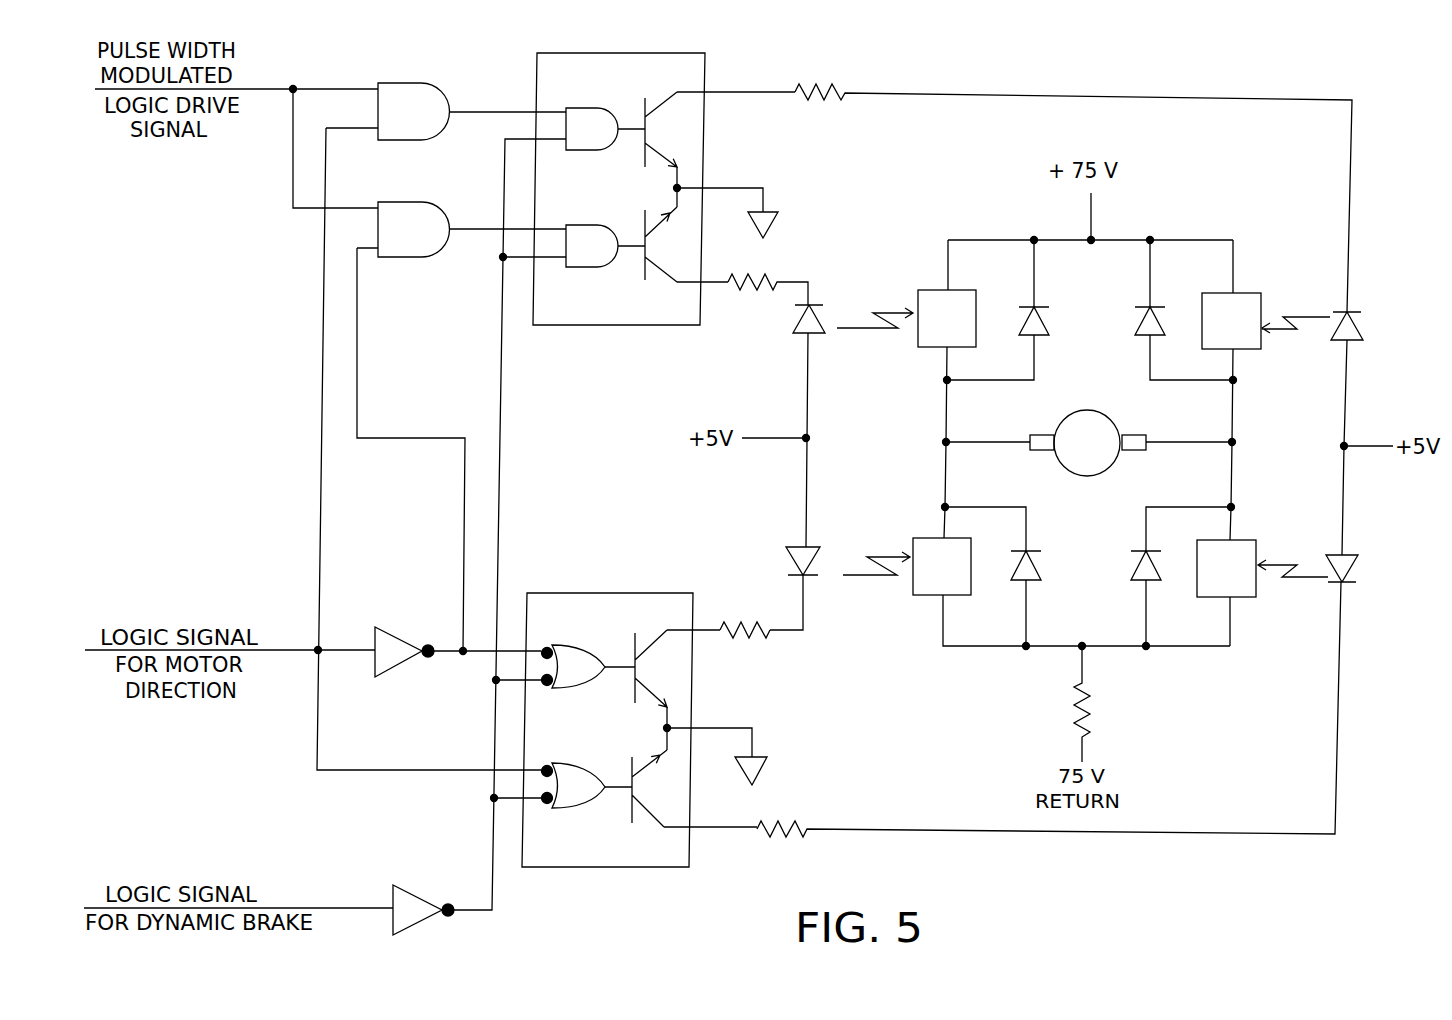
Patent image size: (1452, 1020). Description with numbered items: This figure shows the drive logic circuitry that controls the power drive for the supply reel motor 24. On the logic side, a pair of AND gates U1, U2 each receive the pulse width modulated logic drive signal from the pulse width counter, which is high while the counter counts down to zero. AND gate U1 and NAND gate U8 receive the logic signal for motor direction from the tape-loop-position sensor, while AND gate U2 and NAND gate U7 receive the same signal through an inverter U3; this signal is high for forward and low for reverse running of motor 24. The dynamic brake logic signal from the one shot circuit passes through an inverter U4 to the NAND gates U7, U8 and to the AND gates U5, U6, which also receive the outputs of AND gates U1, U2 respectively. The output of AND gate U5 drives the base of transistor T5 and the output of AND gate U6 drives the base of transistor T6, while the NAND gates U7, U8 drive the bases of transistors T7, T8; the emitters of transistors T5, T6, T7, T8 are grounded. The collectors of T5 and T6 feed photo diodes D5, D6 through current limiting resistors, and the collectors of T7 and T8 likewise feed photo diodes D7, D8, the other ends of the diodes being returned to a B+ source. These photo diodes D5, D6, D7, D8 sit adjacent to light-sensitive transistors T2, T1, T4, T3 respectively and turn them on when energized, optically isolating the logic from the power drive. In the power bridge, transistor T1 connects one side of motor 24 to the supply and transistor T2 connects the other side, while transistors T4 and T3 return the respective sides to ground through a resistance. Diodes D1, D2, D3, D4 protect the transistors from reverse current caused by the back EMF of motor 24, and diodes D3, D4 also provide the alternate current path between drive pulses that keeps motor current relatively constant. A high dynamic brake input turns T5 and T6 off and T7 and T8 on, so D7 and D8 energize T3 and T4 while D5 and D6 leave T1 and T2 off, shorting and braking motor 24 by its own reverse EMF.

The supply reel motor 24 is at (1099, 457).
The AND gate U1 is at (413, 111).
The AND gate U2 is at (414, 229).
The inverter U3 is at (404, 639).
The inverter U4 is at (423, 902).
The AND gate U5 is at (592, 129).
The AND gate U6 is at (592, 246).
The NAND gate U7 is at (574, 666).
The NAND gate U8 is at (574, 785).
The transistor T1 is at (947, 318).
The transistor T2 is at (1231, 321).
The transistor T3 is at (1226, 568).
The transistor T4 is at (942, 566).
The transistor T5 is at (661, 129).
The transistor T6 is at (661, 244).
The transistor T7 is at (651, 668).
The transistor T8 is at (649, 788).
The diode D1 is at (1048, 322).
The diode D2 is at (1136, 322).
The diode D3 is at (1128, 566).
The diode D4 is at (1039, 566).
The photo diode D5 is at (1361, 329).
The photo diode D6 is at (791, 327).
The photo diode D7 is at (786, 558).
The photo diode D8 is at (1357, 573).